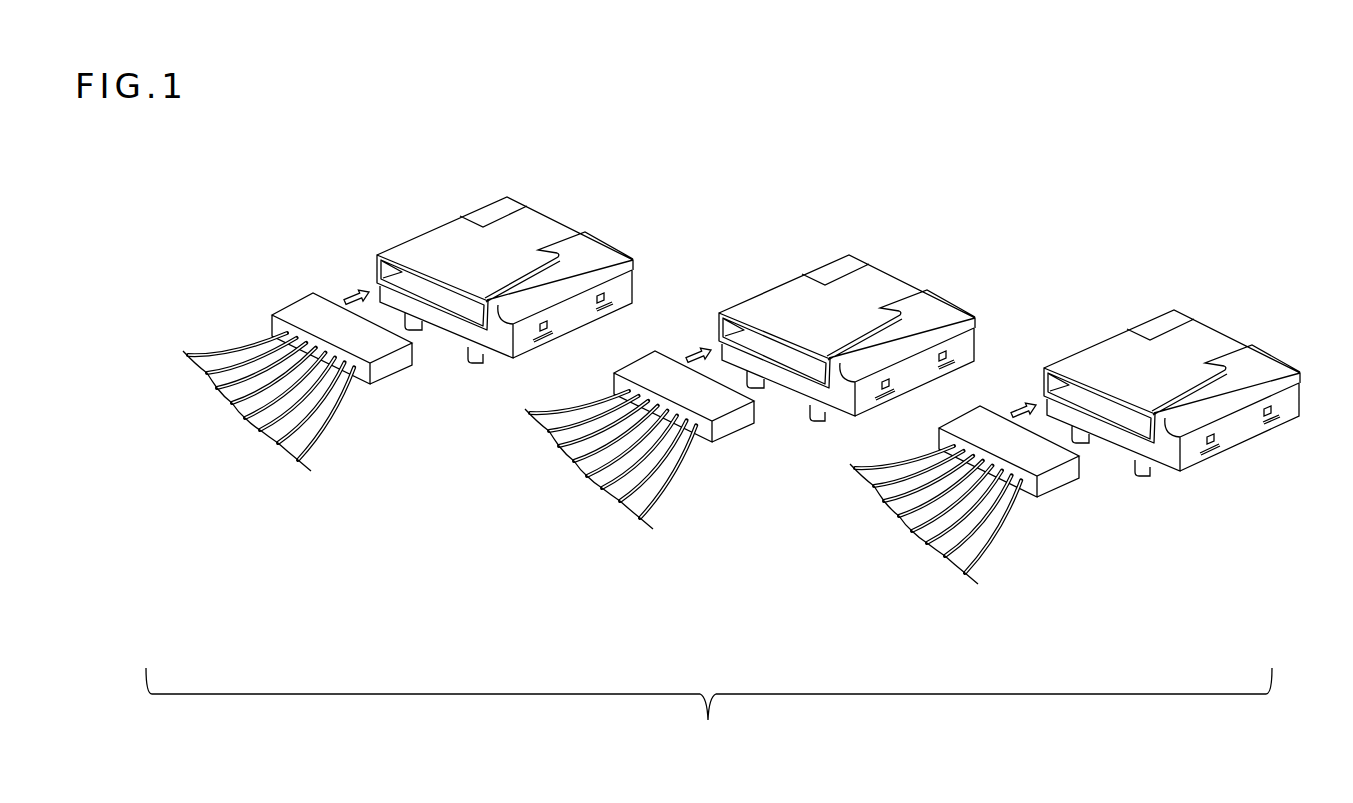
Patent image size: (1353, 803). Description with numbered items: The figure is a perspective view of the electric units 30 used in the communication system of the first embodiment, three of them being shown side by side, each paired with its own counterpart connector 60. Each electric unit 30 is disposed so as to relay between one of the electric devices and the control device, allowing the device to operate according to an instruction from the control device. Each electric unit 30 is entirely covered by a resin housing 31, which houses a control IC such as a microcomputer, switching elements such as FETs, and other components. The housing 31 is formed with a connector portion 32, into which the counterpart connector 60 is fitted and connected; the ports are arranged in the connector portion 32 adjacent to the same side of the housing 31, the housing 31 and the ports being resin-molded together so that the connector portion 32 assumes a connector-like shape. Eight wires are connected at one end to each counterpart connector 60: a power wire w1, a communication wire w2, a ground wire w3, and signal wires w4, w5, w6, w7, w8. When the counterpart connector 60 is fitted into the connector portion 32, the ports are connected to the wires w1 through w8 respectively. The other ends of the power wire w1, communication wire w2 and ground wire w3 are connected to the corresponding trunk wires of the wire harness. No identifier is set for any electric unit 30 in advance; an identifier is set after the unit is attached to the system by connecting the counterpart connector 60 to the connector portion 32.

The electric unit 30 is at (846, 306).
The housing 31 is at (844, 345).
The connector portion 32 is at (458, 308).
The counterpart connector 60 is at (384, 368).
The power wire w1 is at (186, 354).
The communication wire w2 is at (205, 372).
The ground wire w3 is at (215, 388).
The signal wire w4 is at (229, 403).
The signal wire w5 is at (243, 418).
The signal wire w6 is at (258, 430).
The signal wire w7 is at (275, 443).
The signal wire w8 is at (296, 460).